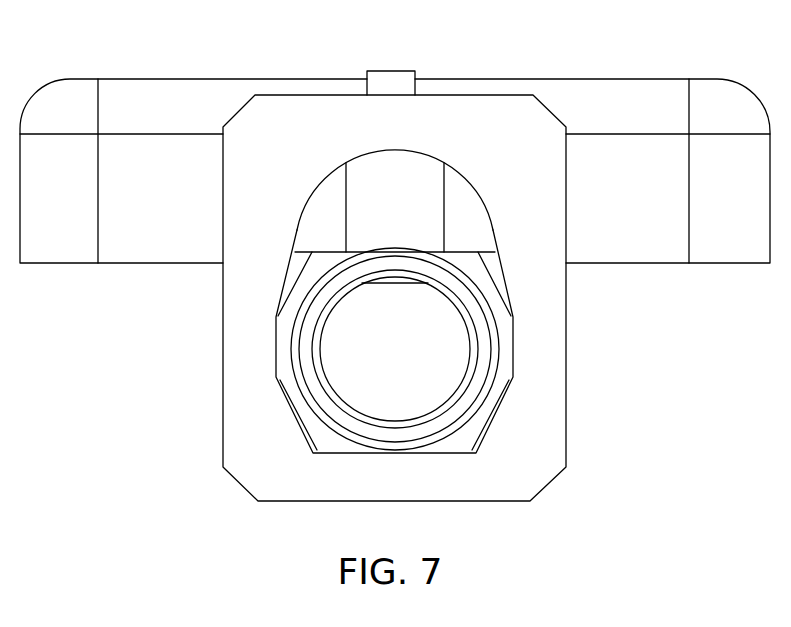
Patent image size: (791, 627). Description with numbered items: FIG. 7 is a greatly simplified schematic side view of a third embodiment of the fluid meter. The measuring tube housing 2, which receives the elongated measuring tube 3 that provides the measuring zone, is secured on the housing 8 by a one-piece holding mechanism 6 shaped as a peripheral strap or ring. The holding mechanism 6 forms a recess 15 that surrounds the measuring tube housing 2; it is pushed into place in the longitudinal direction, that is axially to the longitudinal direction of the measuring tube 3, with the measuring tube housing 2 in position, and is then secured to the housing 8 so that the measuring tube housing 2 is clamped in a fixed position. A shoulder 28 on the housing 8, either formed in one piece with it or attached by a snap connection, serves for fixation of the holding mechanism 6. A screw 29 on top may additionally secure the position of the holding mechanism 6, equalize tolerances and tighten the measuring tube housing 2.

The measuring tube housing 2 is at (473, 432).
The measuring tube 3 is at (478, 352).
The holding mechanism 6 is at (523, 479).
The housing 8 is at (629, 83).
The recess 15 is at (292, 278).
The shoulder 28 is at (430, 167).
The screw 29 is at (392, 70).